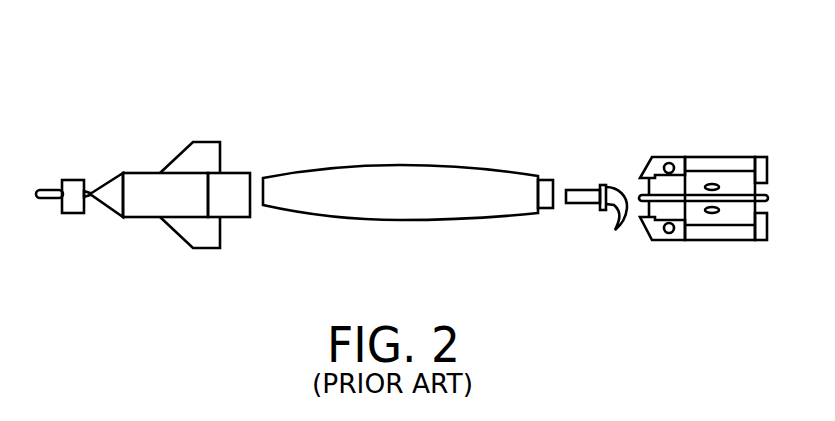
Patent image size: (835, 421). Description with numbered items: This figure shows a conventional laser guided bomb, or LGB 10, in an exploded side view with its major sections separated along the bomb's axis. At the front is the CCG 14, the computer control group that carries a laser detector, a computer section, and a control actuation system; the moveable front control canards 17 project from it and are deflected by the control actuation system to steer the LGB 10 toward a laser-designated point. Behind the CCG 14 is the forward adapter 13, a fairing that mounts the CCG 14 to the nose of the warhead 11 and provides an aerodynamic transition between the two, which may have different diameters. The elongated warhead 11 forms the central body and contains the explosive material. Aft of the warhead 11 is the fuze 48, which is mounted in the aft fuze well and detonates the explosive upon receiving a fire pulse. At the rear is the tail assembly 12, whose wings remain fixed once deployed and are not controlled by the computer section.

The LGB 10 is at (545, 109).
The warhead 11 is at (347, 165).
The tail assembly 12 is at (711, 148).
The forward adapter 13 is at (233, 173).
The CCG 14 is at (127, 82).
The front control canards 17 is at (200, 141).
The fuze 48 is at (583, 210).